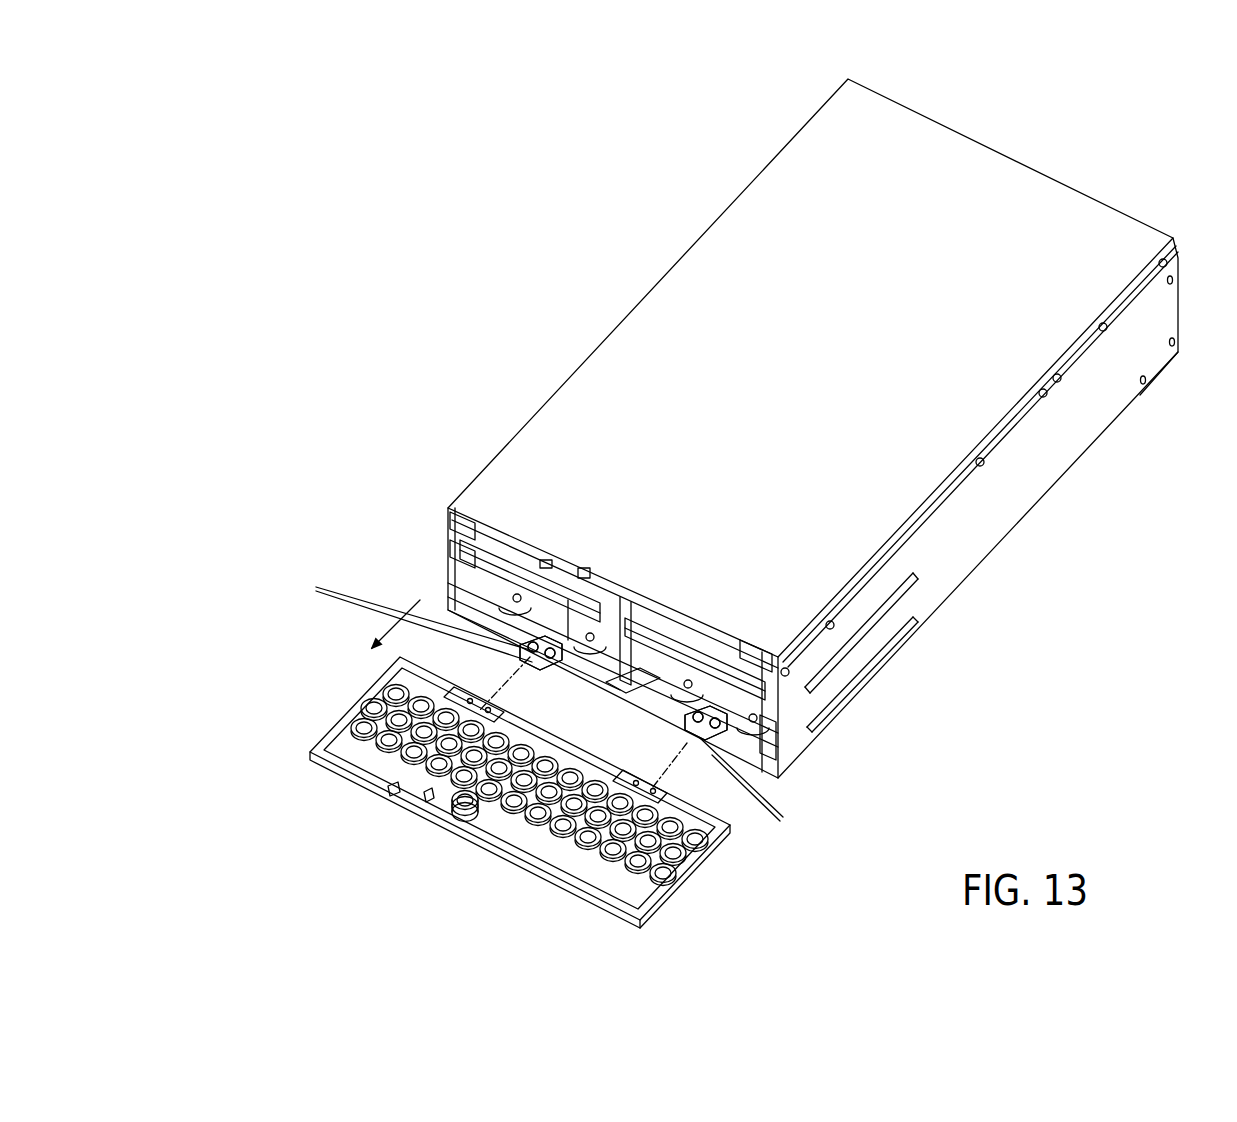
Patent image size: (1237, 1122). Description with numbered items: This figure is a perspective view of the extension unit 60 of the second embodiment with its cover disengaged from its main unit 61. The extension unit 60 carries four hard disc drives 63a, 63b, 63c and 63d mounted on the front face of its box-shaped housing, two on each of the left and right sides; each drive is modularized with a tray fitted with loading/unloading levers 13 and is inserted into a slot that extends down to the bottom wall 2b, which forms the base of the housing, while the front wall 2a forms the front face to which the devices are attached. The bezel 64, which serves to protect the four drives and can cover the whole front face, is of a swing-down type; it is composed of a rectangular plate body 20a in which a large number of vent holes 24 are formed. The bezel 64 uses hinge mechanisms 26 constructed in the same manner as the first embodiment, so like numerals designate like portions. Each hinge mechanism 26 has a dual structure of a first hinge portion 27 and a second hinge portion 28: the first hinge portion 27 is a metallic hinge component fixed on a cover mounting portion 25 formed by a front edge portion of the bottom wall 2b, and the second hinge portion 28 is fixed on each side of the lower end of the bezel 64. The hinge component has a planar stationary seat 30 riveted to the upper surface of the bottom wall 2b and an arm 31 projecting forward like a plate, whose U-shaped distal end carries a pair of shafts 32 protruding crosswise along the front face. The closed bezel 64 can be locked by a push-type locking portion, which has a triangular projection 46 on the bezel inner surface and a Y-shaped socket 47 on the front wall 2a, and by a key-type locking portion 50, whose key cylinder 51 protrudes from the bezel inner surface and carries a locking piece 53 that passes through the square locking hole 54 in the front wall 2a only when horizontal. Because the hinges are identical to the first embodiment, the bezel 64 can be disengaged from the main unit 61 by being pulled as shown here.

The extension unit 60 is at (478, 272).
The main unit 61 is at (638, 290).
The hard disc drive 63a is at (448, 530).
The hard disc drive 63b is at (453, 568).
The hard disc drive 63c is at (723, 662).
The hard disc drive 63d is at (780, 727).
The loading/unloading lever 13 is at (507, 590).
The Y-shaped socket 47 is at (547, 563).
The locking hole 54 is at (587, 570).
The front wall 2a is at (642, 608).
The bottom wall 2b is at (598, 670).
The cover mounting portion 25 is at (570, 656).
The stationary seat 30 is at (520, 648).
The arm 31 is at (624, 685).
The shaft 32 is at (548, 711).
The first hinge portion 27 is at (378, 560).
The hinge mechanism 26 is at (440, 617).
The second hinge portion 28 is at (482, 700).
The bezel 64 is at (300, 768).
The body 20a is at (618, 890).
The vent hole 24 is at (390, 686).
The key-type locking portion 50 is at (480, 820).
The key cylinder 51 is at (487, 817).
The locking piece 53 is at (455, 810).
The triangular projection 46 is at (425, 800).